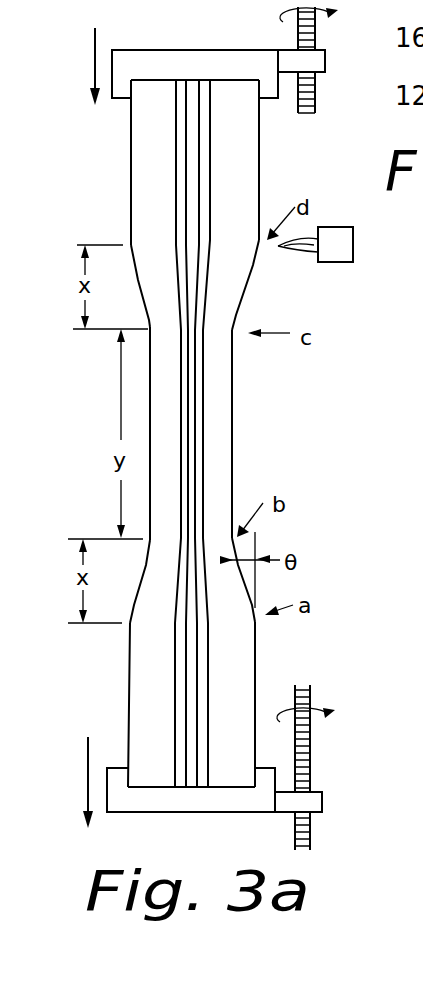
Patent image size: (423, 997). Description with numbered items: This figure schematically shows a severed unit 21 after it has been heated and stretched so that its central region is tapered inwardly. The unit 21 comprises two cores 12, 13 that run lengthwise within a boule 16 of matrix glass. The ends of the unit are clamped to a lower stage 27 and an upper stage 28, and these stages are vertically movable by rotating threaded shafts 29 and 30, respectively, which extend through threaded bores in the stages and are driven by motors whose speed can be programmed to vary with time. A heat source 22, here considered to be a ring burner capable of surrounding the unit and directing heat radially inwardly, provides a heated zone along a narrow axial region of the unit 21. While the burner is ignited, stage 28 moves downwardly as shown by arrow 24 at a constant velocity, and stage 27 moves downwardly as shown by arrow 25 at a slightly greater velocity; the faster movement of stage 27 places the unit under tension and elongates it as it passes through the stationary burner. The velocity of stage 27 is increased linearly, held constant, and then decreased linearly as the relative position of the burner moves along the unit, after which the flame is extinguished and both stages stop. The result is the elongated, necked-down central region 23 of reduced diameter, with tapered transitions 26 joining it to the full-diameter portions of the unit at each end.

The core 12 is at (183, 156).
The core 13 is at (203, 164).
The boule of matrix glass 16 is at (143, 198).
The unit 21 is at (116, 697).
The heat source 22 is at (353, 245).
The necked-down central region 23 is at (236, 403).
The arrow 24 is at (95, 60).
The arrow 25 is at (88, 782).
The tapered transition region 26 is at (247, 288).
The stage 27 is at (217, 803).
The stage 28 is at (213, 58).
The threaded shaft 29 is at (313, 747).
The threaded shaft 30 is at (317, 93).